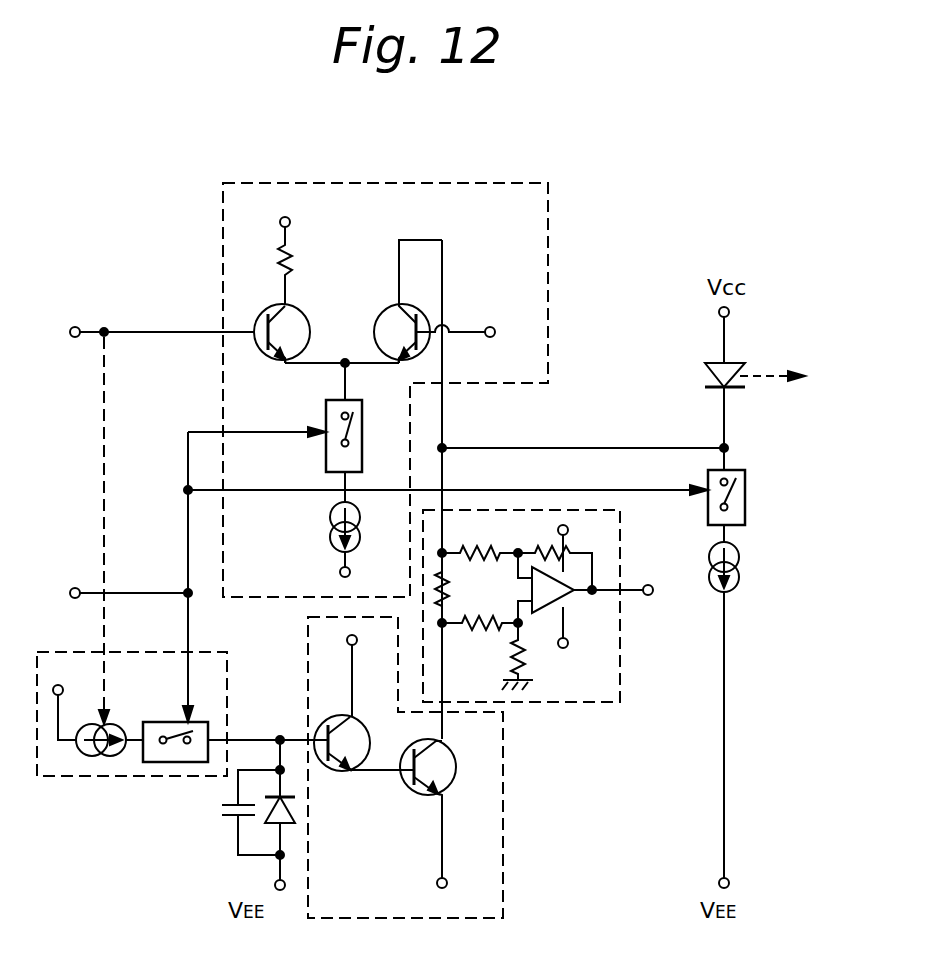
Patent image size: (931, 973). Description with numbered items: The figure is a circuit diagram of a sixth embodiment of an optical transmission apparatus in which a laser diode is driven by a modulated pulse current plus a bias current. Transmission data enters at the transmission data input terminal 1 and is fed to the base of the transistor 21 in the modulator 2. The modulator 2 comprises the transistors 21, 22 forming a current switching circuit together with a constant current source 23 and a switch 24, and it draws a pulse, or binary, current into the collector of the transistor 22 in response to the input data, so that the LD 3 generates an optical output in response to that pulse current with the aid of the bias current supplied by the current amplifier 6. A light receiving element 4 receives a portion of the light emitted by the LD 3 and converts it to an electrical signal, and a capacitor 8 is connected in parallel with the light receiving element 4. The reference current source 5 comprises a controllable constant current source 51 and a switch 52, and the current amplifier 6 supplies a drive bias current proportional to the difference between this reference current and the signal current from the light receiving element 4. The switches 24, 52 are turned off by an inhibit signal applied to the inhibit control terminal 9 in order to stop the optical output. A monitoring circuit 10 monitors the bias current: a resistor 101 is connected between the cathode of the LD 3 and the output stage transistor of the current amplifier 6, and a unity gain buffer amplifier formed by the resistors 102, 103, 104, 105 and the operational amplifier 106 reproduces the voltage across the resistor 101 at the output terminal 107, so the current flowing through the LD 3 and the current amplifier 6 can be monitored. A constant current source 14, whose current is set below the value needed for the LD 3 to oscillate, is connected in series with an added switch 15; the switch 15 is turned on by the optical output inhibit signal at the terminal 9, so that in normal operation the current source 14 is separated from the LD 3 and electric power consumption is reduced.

The transmission data input terminal 1 is at (77, 326).
The modulator 2 is at (548, 190).
The LD 3 is at (740, 370).
The light receiving element 4 is at (295, 826).
The reference current source 5 is at (68, 780).
The current amplifier 6 is at (503, 875).
The capacitor 8 is at (222, 816).
The inhibit control terminal 9 is at (77, 588).
The monitoring circuit 10 is at (620, 510).
The constant current source 14 is at (740, 570).
The switch 15 is at (745, 497).
The transistor 21 is at (298, 300).
The transistor 22 is at (380, 325).
The constant current source 23 is at (360, 528).
The switch 24 is at (362, 420).
The controllable constant current source 51 is at (110, 757).
The switch 52 is at (157, 722).
The resistor 101 is at (450, 583).
The resistor 102 is at (468, 553).
The resistor 103 is at (534, 553).
The resistor 104 is at (472, 630).
The resistor 105 is at (530, 668).
The operational amplifier 106 is at (565, 598).
The output terminal 107 is at (650, 585).